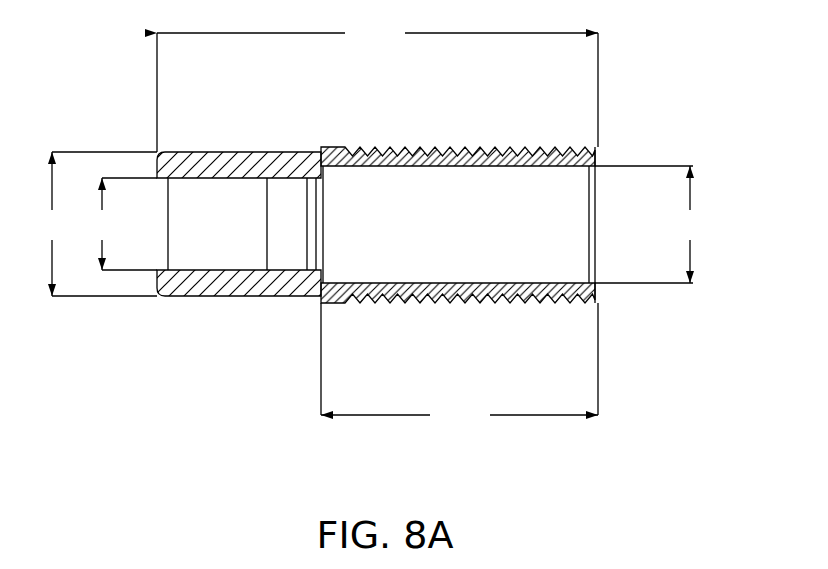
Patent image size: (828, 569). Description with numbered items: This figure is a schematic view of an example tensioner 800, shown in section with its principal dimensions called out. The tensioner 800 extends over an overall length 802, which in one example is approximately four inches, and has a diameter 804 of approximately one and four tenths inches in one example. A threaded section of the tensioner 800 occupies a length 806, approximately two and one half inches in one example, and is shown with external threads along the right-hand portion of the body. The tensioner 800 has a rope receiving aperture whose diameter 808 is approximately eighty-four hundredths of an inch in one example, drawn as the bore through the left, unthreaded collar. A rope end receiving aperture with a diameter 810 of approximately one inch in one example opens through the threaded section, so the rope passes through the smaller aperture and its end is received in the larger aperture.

The tensioner 800 is at (645, 338).
The length 802 is at (377, 88).
The diameter 804 is at (97, 224).
The length 806 is at (459, 364).
The rope receiving aperture diameter 808 is at (122, 224).
The diameter 810 is at (650, 224).